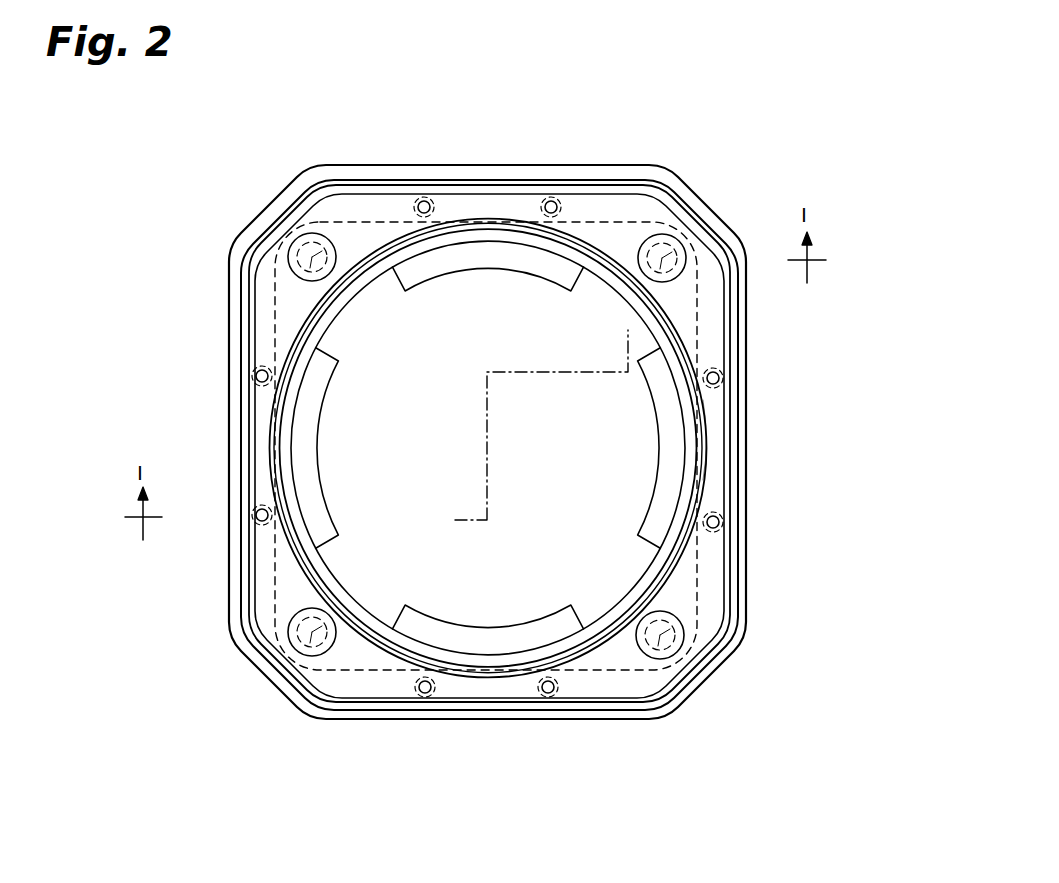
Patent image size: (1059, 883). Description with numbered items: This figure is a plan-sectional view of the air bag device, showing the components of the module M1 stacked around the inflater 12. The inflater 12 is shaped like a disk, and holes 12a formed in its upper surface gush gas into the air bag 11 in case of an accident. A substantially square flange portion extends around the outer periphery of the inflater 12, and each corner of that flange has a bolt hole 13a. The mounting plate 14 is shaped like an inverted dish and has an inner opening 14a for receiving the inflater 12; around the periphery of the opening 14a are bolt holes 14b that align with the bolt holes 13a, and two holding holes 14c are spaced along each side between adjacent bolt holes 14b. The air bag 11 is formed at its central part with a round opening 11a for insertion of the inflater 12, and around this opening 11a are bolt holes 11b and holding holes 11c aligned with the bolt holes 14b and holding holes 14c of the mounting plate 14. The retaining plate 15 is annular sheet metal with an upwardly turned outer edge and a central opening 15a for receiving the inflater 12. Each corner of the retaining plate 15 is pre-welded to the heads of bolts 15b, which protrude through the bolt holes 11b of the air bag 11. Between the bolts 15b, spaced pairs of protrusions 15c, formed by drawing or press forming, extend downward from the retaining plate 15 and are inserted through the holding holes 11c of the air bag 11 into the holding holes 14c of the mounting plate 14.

The lens module M1 is at (718, 101).
The air bag 11 is at (740, 331).
The round opening 11a is at (778, 440).
The bolt holes 11b is at (531, 441).
The holding holes 11c is at (494, 439).
The inflater 12 is at (461, 444).
The holes 12a is at (490, 266).
The bolt hole 13a is at (531, 441).
The mounting plate 14 is at (735, 344).
The inner opening 14a is at (702, 440).
The bolt holes 14b is at (315, 222).
The holding holes 14c is at (430, 197).
The retaining plate 15 is at (717, 472).
The opening 15a is at (702, 489).
The bolts 15b is at (311, 258).
The protrusions 15c is at (418, 203).